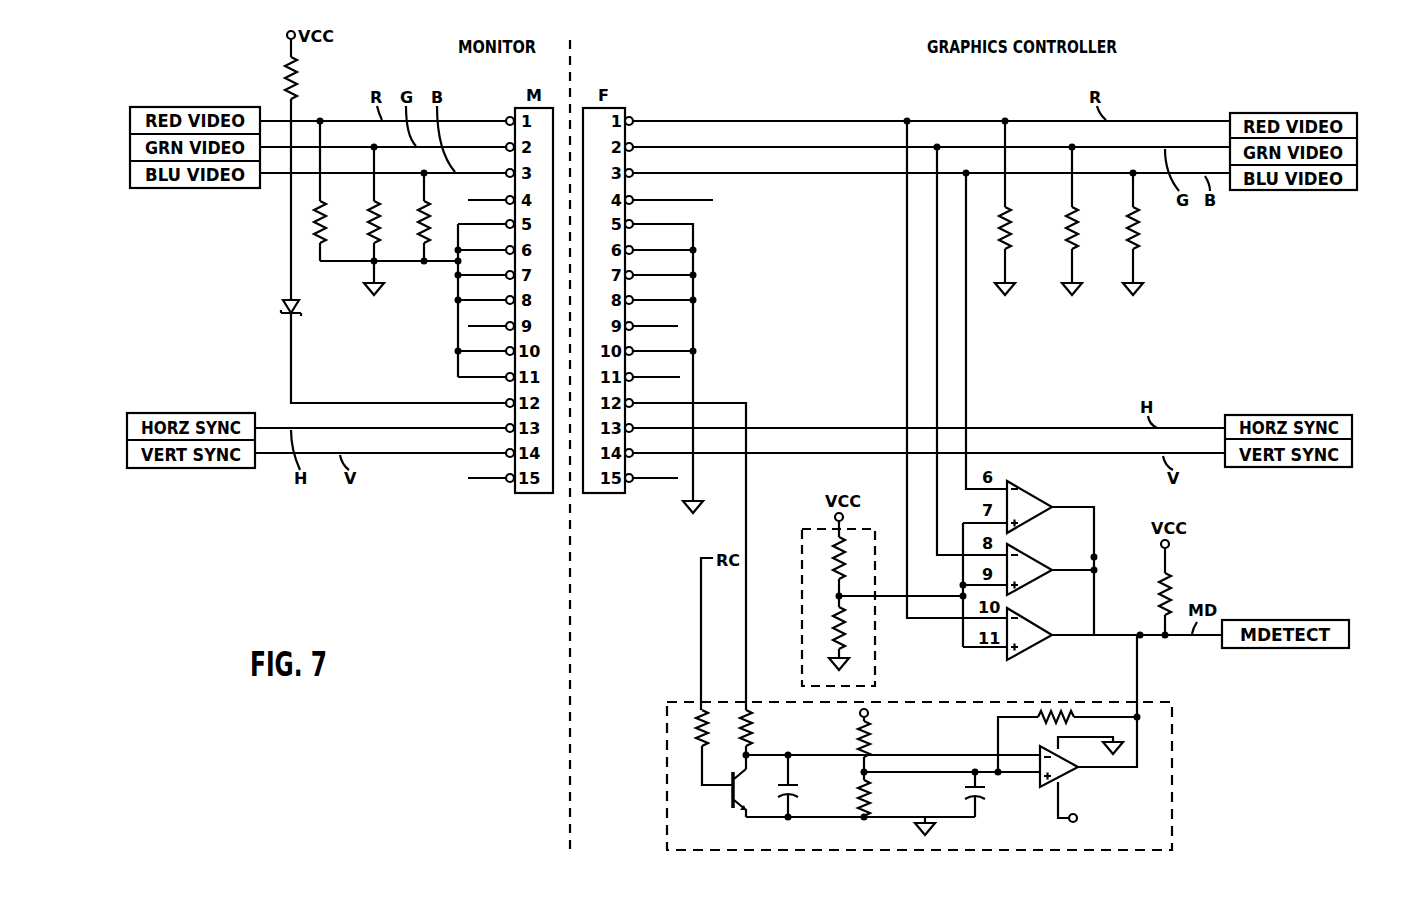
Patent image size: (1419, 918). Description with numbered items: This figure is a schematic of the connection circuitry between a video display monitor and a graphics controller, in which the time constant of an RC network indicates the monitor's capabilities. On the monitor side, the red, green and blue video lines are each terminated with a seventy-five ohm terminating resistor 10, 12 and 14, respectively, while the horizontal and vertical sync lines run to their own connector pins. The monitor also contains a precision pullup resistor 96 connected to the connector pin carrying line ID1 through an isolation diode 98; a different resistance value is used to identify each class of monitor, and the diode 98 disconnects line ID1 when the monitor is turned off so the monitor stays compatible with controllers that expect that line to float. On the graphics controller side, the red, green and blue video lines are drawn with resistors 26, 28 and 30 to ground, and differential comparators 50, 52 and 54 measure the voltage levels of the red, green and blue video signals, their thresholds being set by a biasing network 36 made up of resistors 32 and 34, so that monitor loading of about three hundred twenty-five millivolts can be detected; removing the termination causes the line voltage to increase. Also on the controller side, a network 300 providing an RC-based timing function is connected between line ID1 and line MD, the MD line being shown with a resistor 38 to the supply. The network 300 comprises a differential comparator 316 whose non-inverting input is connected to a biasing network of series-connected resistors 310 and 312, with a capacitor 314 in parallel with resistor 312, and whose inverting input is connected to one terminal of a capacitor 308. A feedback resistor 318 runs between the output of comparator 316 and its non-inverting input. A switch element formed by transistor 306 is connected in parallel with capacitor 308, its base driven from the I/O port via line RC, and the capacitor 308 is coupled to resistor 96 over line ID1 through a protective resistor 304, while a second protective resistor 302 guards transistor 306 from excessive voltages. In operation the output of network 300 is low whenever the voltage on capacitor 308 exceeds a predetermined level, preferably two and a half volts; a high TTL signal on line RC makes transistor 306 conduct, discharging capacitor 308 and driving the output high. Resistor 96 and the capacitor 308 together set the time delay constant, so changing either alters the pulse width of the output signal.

The terminating resistor 10 is at (326, 222).
The terminating resistor 12 is at (380, 222).
The terminating resistor 14 is at (430, 212).
The red video pull-down resistor 26 is at (1011, 218).
The green video pull-down resistor 28 is at (1065, 232).
The blue video pull-down resistor 30 is at (1126, 232).
The resistor 32 is at (838, 565).
The resistor 34 is at (838, 629).
The biasing network 36 is at (819, 603).
The pull-up resistor 38 is at (1171, 590).
The differential comparator 50 is at (1036, 494).
The differential comparator 52 is at (1036, 557).
The differential comparator 54 is at (1036, 622).
The resistor 96 is at (298, 77).
The diode 98 is at (275, 309).
The network 300 is at (1172, 757).
The second protective resistor 302 is at (719, 728).
The protective resistor 304 is at (752, 730).
The transistor 306 is at (741, 770).
The capacitor 308 is at (796, 772).
The resistor 310 is at (870, 722).
The resistor 312 is at (857, 788).
The capacitor 314 is at (985, 796).
The differential comparator 316 is at (1066, 775).
The feedback resistor 318 is at (1060, 705).